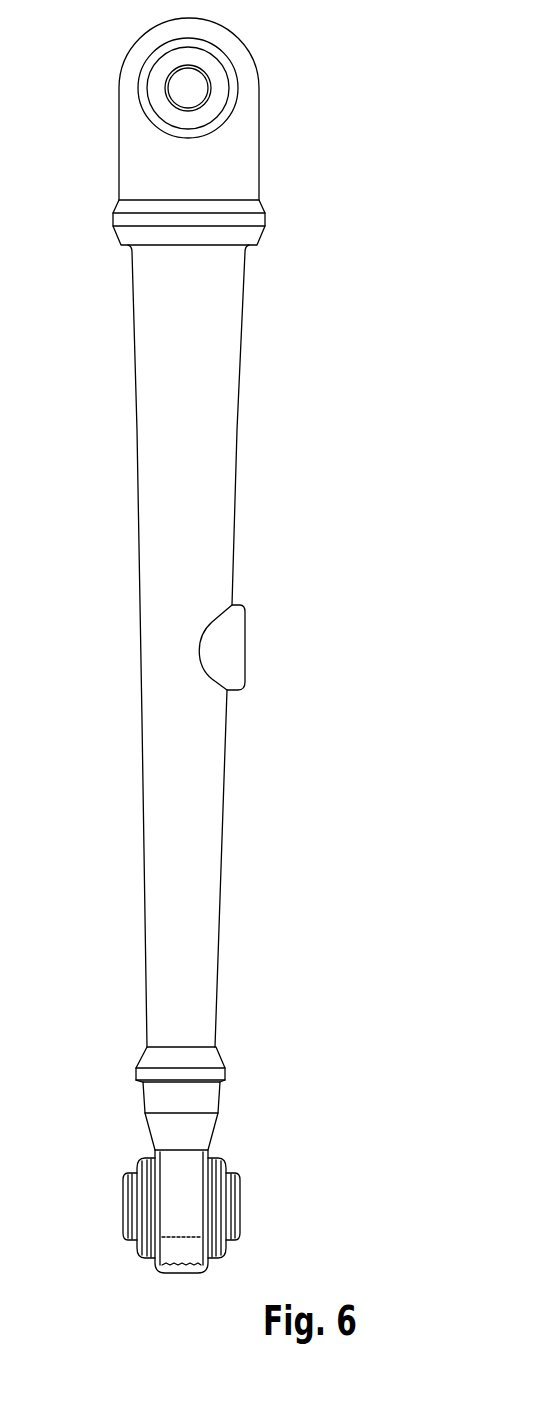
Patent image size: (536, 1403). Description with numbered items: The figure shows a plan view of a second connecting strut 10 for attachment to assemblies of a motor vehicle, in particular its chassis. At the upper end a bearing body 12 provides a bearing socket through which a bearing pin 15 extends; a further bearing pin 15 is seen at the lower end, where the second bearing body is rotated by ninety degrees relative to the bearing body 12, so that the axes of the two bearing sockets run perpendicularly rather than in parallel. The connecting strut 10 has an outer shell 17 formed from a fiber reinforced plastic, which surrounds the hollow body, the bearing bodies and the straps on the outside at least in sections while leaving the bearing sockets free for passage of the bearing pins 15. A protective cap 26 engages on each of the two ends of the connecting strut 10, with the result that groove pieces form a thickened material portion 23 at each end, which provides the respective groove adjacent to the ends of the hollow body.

The connecting strut 10 is at (184, 645).
The bearing body 12 is at (233, 83).
The bearing pin 15 is at (212, 105).
The outer shell 17 is at (170, 590).
The thickened material portion 23 is at (112, 238).
The protective cap 26 is at (142, 160).